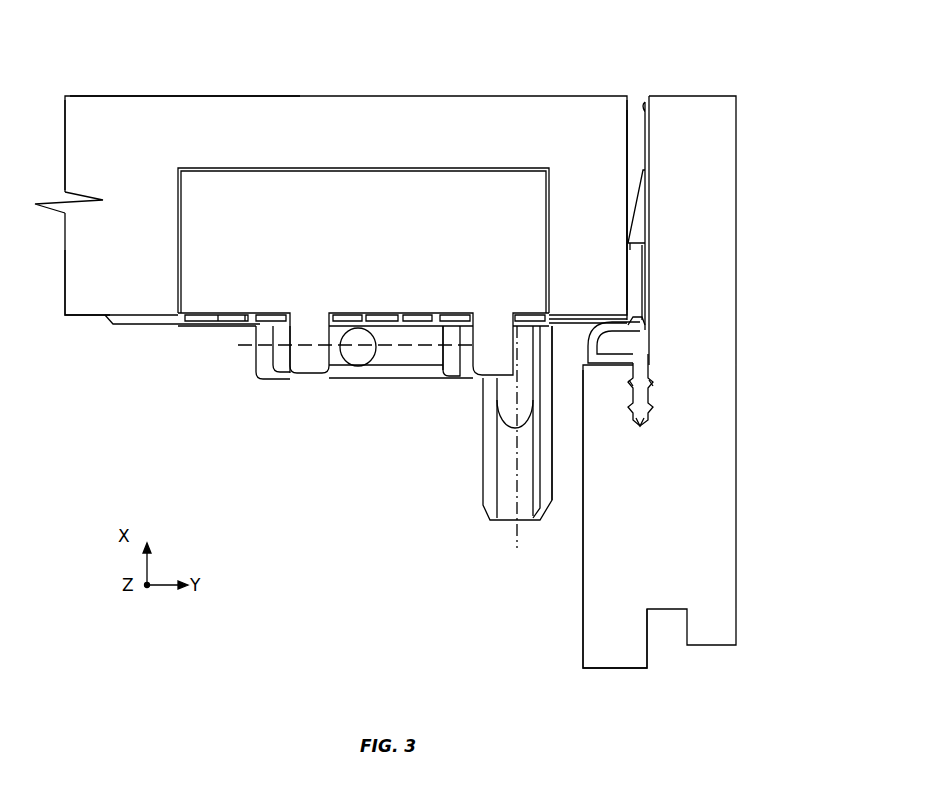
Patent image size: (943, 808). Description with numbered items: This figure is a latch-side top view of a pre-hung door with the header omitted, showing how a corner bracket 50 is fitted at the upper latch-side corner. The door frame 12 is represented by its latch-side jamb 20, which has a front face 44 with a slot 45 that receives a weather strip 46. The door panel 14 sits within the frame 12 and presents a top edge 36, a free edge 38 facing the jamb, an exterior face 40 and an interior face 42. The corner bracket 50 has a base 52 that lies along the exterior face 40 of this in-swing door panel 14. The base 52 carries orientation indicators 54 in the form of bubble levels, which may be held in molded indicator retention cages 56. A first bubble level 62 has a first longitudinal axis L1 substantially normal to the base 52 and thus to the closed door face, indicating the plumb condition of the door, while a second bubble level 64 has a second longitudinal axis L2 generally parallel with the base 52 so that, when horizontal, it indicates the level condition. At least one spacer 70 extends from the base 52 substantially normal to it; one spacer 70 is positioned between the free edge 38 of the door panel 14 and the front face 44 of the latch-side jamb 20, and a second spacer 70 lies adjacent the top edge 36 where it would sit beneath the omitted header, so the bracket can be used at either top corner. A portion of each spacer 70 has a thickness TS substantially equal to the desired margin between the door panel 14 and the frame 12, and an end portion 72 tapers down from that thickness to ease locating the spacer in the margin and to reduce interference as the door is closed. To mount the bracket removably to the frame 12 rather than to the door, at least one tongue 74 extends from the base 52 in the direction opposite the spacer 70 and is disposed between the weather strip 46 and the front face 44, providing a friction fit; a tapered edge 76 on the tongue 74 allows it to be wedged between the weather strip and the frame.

The door frame 12 is at (715, 188).
The door panel 14 is at (510, 125).
The latch-side jamb 20 is at (715, 555).
The top edge 36 is at (146, 128).
The free edge 38 is at (633, 108).
The exterior face 40 is at (88, 316).
The interior face 42 is at (228, 96).
The front face 44 is at (644, 112).
The slot 45 is at (643, 424).
The weather strip 46 is at (616, 333).
The corner bracket 50 is at (374, 405).
The base 52 is at (178, 324).
The orientation indicator 54 is at (358, 350).
The indicator retention cage 56 is at (428, 370).
The first bubble level 62 is at (515, 482).
The second bubble level 64 is at (278, 372).
The spacer 70 is at (358, 210).
The end portion 72 is at (638, 207).
The tongue 74 is at (313, 373).
The tapered edge 76 is at (651, 396).
The thickness TS is at (633, 243).
The first longitudinal axis L1 is at (516, 446).
The second longitudinal axis L2 is at (342, 345).